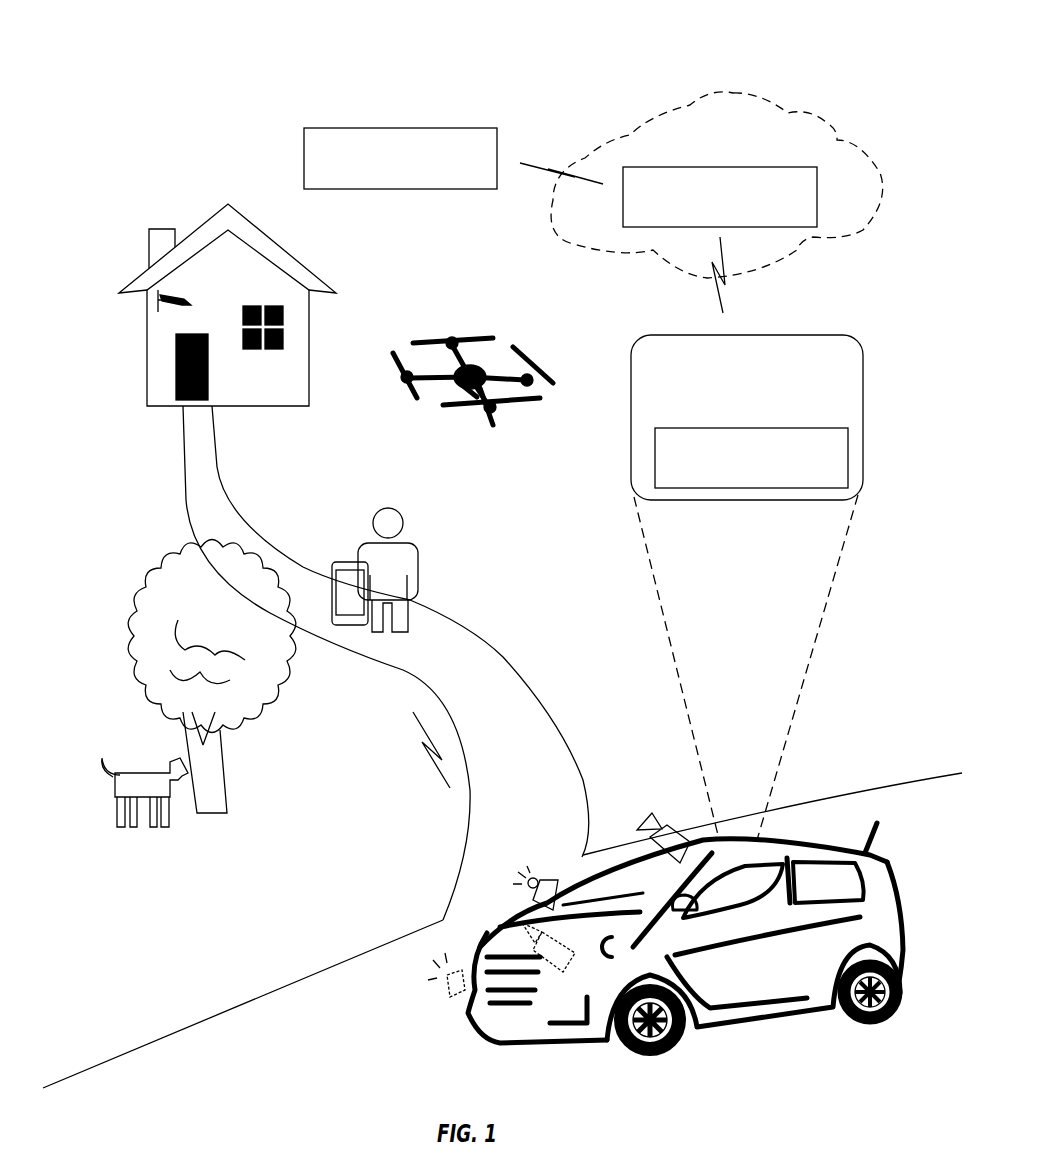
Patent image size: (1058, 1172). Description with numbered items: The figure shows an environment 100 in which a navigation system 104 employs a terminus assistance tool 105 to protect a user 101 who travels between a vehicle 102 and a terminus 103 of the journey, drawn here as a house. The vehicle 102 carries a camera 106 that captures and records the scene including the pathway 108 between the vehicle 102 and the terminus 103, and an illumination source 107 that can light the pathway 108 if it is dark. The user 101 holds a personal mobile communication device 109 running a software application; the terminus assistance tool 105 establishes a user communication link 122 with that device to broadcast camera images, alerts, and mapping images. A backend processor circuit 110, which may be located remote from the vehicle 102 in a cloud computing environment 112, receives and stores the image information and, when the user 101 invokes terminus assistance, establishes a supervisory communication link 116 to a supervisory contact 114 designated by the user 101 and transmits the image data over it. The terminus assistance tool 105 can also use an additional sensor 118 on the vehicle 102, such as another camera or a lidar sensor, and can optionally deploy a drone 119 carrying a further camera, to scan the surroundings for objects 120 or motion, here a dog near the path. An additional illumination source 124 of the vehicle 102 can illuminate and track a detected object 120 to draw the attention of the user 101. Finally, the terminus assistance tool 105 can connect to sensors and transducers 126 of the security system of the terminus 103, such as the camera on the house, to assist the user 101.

The environment 100 is at (487, 43).
The user 101 is at (418, 547).
The vehicle 102 is at (737, 1027).
The terminus 103 is at (280, 258).
The navigation system 104 is at (803, 330).
The terminus assistance tool 105 is at (713, 428).
The camera 106 is at (667, 825).
The illumination source 107 is at (552, 897).
The pathway 108 is at (463, 669).
The personal mobile communication device 109 is at (337, 560).
The backend processor circuit 110 is at (680, 167).
The cloud computing environment 112 is at (733, 98).
The supervisory contact 114 is at (362, 128).
The supervisory communication link 116 is at (537, 165).
The additional sensor 118 is at (548, 940).
The drone 119 is at (458, 340).
The object 120 is at (138, 787).
The user communication link 122 is at (443, 777).
The additional illumination source 124 is at (462, 997).
The sensors and transducers 126 is at (180, 303).